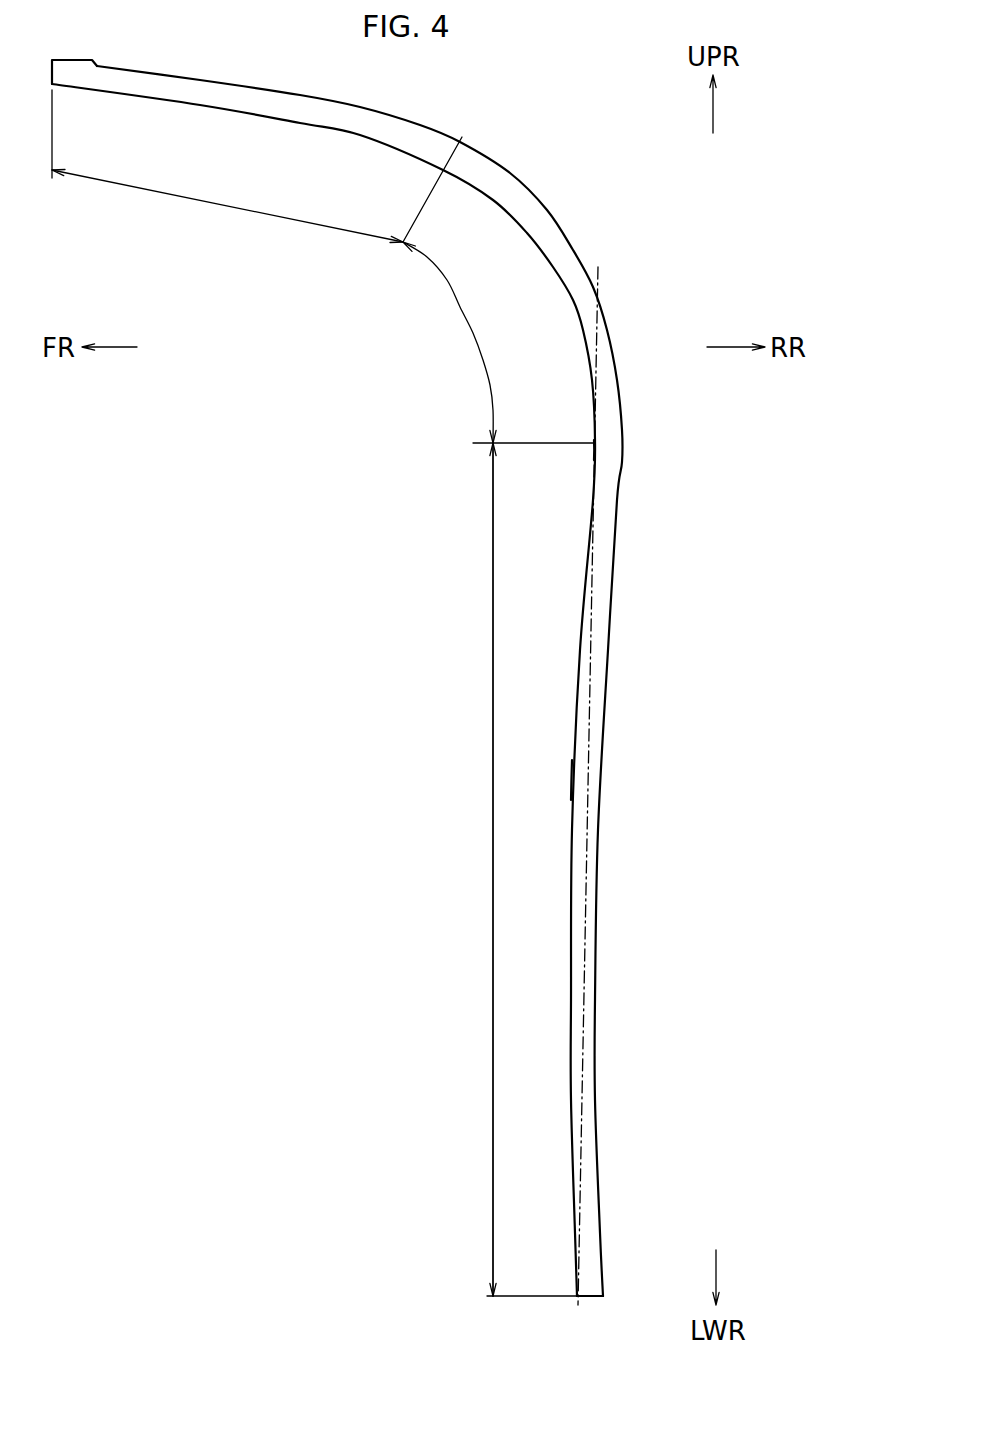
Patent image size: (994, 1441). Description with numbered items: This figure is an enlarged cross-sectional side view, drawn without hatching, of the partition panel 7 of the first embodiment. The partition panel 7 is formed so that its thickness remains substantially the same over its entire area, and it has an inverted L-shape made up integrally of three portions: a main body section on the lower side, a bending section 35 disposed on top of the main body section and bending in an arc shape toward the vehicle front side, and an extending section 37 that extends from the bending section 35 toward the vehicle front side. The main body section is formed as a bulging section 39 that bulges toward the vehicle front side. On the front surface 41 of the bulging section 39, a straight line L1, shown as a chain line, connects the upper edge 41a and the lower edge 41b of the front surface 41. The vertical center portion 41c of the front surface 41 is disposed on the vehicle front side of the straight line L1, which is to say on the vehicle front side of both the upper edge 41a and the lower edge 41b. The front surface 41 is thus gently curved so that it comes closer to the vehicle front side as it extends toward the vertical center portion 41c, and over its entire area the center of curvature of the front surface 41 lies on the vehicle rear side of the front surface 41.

The partition panel 7 is at (389, 704).
The bending section 35 is at (455, 289).
The extending section 37 is at (185, 199).
The bulging section 39 is at (493, 660).
The front surface 41 is at (594, 548).
The upper edge 41a is at (594, 448).
The lower edge 41b is at (576, 1299).
The vertical center portion 41c is at (577, 772).
The straight line L1 is at (599, 280).